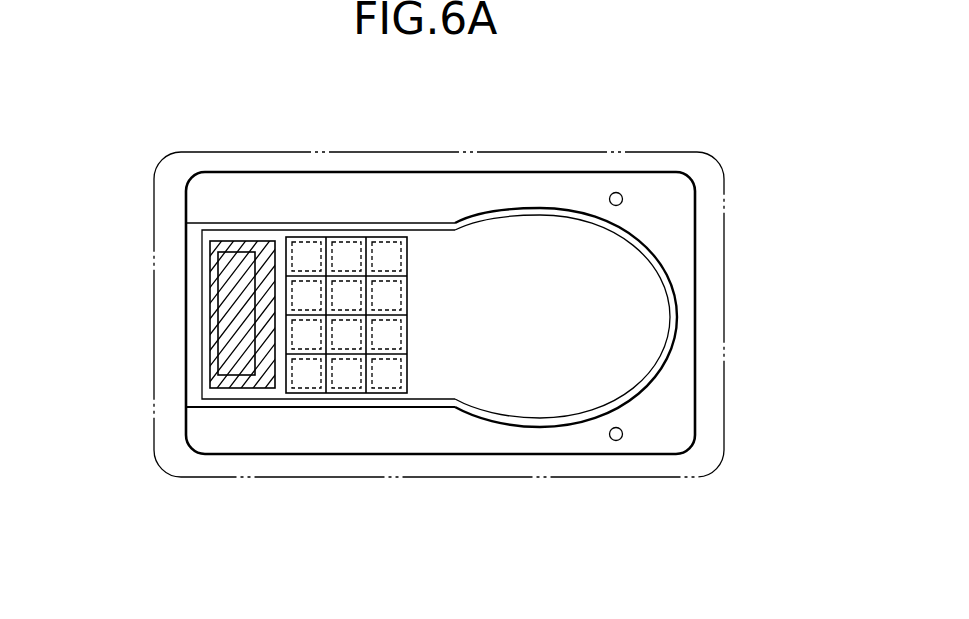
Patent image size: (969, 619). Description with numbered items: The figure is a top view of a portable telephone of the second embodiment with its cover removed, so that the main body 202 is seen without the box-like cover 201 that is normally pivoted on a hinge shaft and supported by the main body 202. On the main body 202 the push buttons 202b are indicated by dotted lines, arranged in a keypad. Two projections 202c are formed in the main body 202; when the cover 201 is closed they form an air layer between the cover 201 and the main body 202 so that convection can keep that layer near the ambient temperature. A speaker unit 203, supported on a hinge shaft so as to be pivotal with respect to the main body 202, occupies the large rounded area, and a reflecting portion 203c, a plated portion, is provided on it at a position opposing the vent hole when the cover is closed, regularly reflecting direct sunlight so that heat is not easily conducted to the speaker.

The cover 201 is at (727, 449).
The main body 202 is at (684, 201).
The push buttons 202b is at (342, 280).
The projections 202c is at (615, 192).
The speaker unit 203 is at (622, 264).
The reflecting portion 203c is at (212, 330).